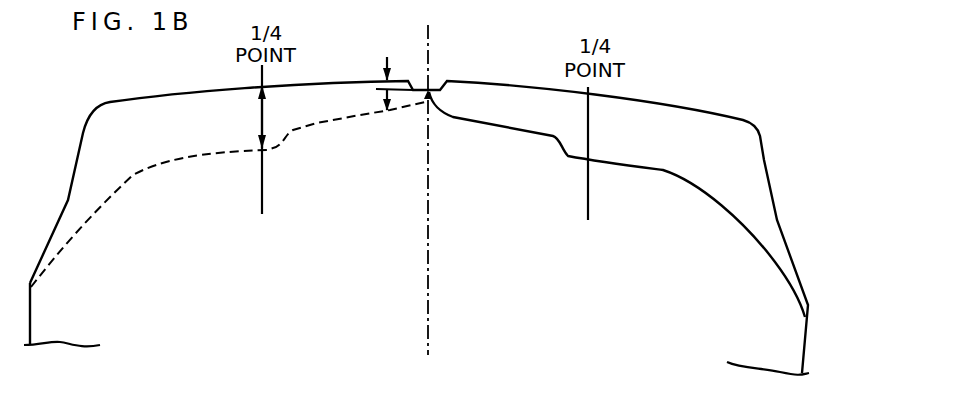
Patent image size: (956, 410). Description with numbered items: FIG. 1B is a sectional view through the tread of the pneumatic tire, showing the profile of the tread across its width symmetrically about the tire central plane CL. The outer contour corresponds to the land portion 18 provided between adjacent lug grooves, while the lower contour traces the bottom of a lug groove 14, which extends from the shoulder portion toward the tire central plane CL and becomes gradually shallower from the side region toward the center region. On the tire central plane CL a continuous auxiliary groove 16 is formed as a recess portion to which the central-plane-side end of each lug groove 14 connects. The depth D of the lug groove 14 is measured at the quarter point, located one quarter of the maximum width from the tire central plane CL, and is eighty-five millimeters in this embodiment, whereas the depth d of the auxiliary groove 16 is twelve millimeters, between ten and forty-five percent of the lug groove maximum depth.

The lug groove 14 is at (664, 170).
The auxiliary groove 16 is at (414, 82).
The land portion 18 is at (766, 158).
The tire central plane CL is at (457, 36).
The depth D is at (262, 125).
The depth d is at (377, 88).